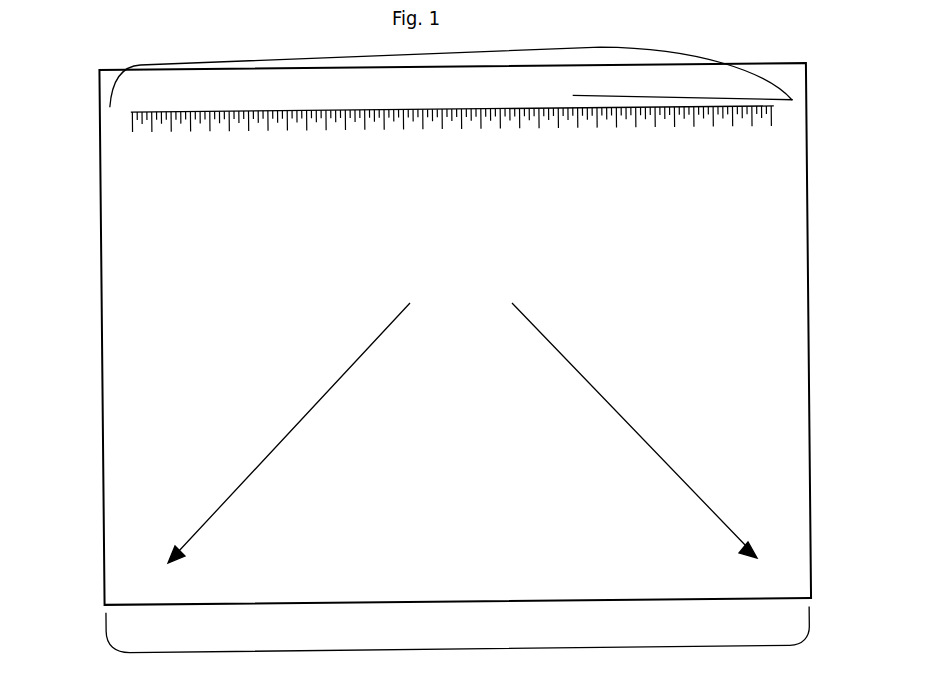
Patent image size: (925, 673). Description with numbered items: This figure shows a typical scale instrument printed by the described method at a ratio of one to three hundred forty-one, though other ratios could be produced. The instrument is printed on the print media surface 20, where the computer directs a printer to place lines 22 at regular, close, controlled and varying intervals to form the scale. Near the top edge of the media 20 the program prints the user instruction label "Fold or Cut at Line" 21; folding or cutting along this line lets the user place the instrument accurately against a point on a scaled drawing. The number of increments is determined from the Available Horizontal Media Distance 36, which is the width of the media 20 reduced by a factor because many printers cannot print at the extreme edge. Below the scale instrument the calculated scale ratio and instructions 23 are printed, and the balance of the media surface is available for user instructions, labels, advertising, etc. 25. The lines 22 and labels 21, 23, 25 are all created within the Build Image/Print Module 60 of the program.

The print media surface 20 is at (100, 235).
The user instruction label "Fold or Cut at Line" 21 is at (793, 100).
The lines 22 is at (130, 136).
The calculated scale ratio and instructions 23 is at (453, 185).
The user instructions, labels, advertising 25 is at (627, 400).
The Available Horizontal Media Distance 36 is at (640, 46).
The Build Image/Print Module 60 is at (125, 654).